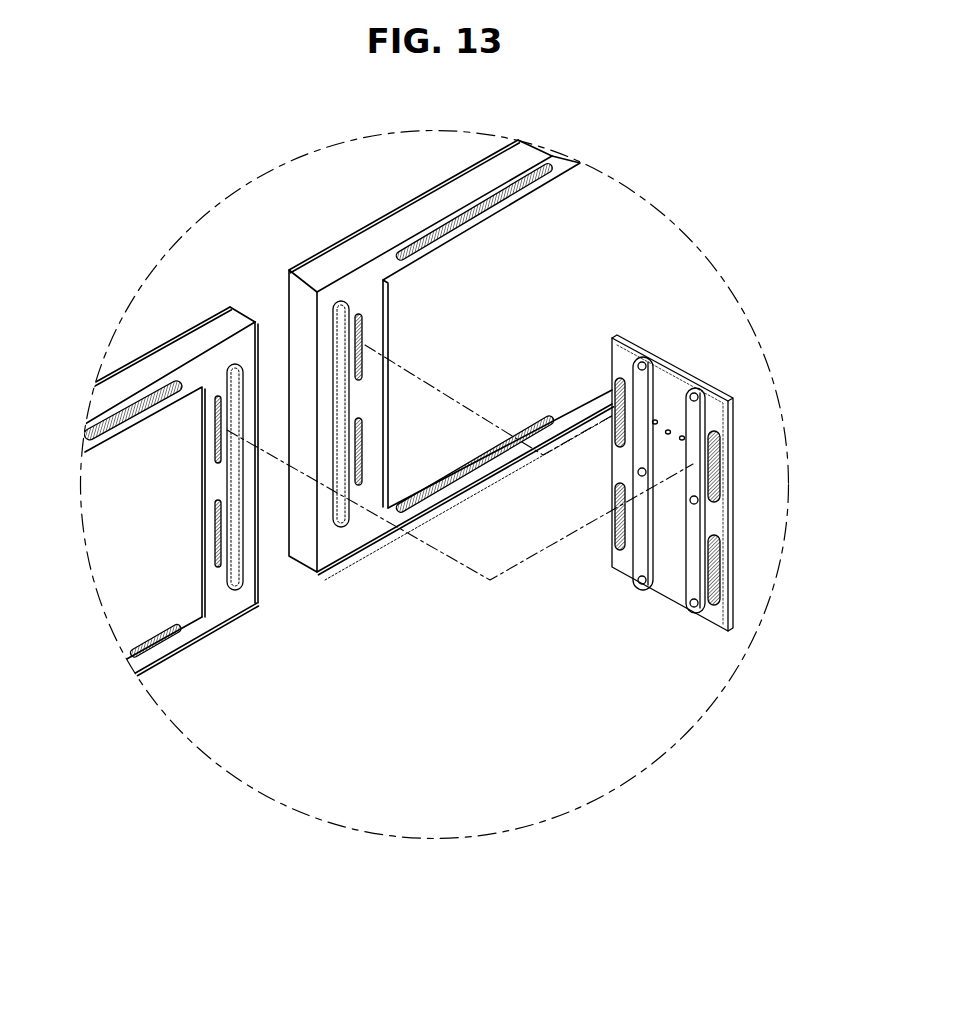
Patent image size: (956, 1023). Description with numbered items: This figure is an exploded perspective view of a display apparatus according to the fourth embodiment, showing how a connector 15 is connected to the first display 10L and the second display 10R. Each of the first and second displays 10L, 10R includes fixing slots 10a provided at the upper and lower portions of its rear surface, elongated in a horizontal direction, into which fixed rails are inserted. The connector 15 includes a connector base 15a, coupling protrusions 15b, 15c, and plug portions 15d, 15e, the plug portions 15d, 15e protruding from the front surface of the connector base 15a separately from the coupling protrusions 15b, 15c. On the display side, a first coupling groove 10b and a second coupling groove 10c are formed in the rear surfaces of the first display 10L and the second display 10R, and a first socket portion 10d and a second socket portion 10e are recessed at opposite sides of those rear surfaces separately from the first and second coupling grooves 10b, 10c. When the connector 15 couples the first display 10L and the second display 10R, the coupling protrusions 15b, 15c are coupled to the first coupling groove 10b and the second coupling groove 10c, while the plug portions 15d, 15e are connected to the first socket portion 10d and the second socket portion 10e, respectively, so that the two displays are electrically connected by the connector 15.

The first display 10L is at (397, 196).
The second display 10R is at (222, 305).
The fixing slot 10a is at (450, 228).
The first coupling groove 10b is at (352, 515).
The second coupling groove 10c is at (243, 580).
The first socket portion 10d is at (362, 340).
The second socket portion 10e is at (213, 413).
The connector 15 is at (725, 391).
The connector base 15a is at (717, 418).
The coupling protrusion 15b is at (645, 360).
The coupling protrusion 15c is at (697, 388).
The plug portion 15d is at (613, 440).
The plug portion 15e is at (720, 480).